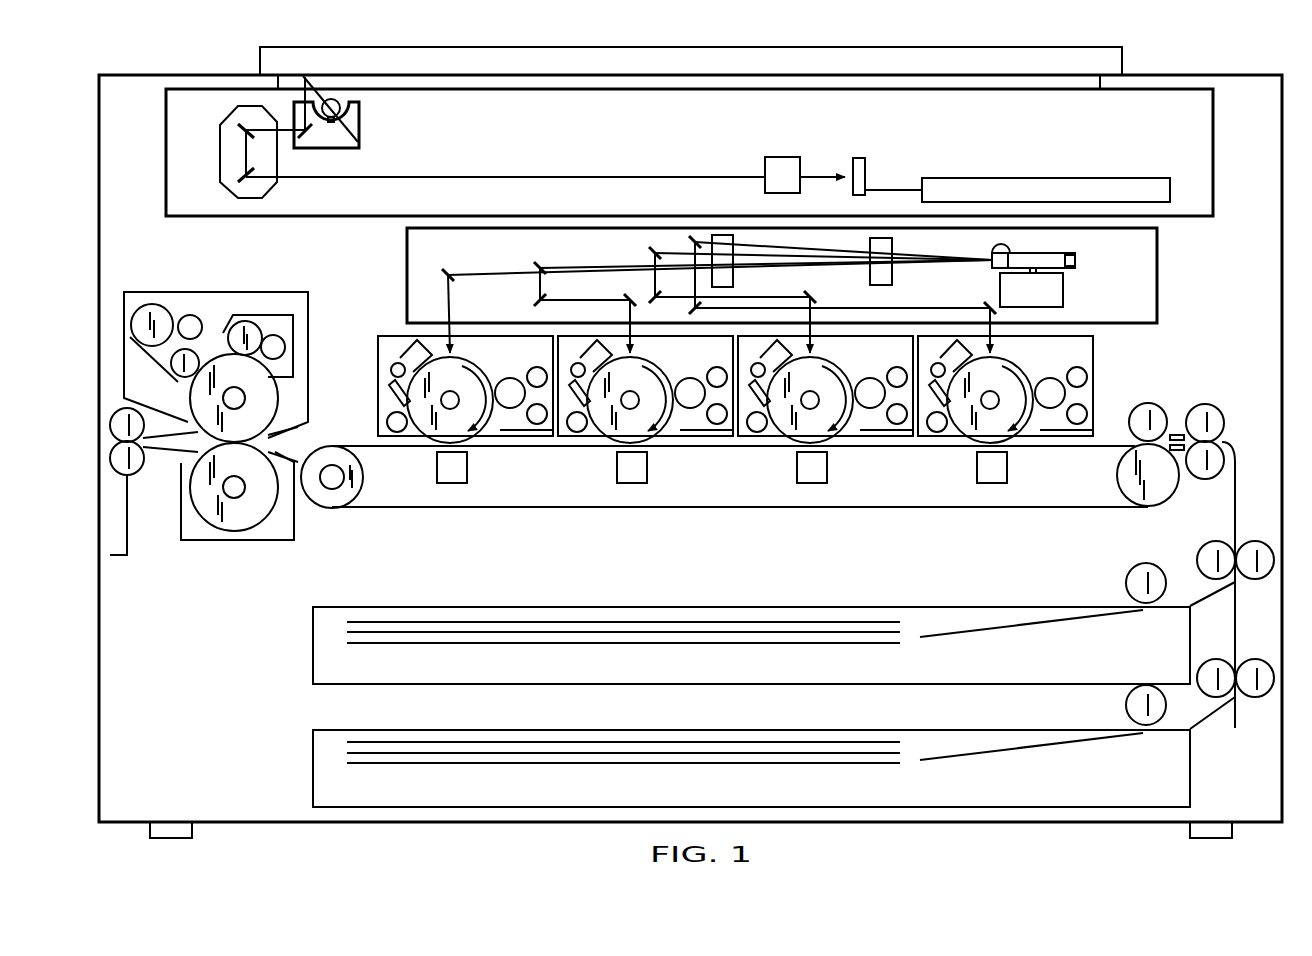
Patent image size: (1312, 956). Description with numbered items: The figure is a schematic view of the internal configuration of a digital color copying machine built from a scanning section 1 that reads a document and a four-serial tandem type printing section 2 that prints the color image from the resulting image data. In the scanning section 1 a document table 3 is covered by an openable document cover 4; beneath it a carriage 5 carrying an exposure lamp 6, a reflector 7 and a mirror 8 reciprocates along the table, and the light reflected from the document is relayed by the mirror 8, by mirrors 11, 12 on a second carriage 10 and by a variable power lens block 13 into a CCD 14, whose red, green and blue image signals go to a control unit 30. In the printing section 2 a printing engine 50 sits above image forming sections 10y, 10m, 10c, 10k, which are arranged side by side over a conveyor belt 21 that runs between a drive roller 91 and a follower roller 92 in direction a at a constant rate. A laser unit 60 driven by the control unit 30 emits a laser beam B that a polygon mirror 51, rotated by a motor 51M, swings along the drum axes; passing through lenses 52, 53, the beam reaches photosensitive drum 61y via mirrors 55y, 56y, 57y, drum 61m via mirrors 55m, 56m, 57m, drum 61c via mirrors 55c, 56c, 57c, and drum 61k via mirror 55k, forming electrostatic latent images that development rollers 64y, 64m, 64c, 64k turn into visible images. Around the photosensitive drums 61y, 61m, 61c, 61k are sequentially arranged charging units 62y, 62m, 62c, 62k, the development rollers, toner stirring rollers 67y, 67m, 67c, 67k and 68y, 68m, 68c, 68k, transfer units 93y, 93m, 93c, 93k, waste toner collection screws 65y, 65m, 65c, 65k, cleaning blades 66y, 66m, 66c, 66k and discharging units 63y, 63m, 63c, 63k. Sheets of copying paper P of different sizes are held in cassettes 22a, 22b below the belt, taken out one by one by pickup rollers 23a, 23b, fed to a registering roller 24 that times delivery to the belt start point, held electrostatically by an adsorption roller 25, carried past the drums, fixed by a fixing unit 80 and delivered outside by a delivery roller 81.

The scanning section 1 is at (1128, 105).
The printing section 2 is at (1198, 294).
The document table 3 is at (556, 92).
The document cover 4 is at (260, 62).
The carriage 5 is at (365, 127).
The exposure lamp 6 is at (352, 110).
The reflector 7 is at (355, 143).
The mirror 8 is at (312, 140).
The carriage 10 is at (275, 187).
The mirror 11 is at (240, 128).
The mirror 12 is at (240, 180).
The variable power lens block 13 is at (790, 157).
The CCD 14 is at (858, 158).
The control unit 30 is at (1143, 182).
The printing engine 50 is at (1157, 252).
The polygon mirror 51 is at (1075, 262).
The motor 51M is at (1063, 295).
The lens 52 is at (892, 250).
The lens 53 is at (722, 235).
The laser unit 60 is at (1010, 250).
The laser beam B is at (820, 257).
The mirror 55k is at (445, 272).
The mirror 55c is at (535, 268).
The mirror 56c is at (535, 302).
The mirror 57c is at (626, 298).
The mirror 55m is at (655, 252).
The mirror 56m is at (652, 295).
The mirror 57m is at (838, 293).
The mirror 55y is at (694, 242).
The mirror 56y is at (690, 308).
The mirror 57y is at (988, 306).
The image forming section 10k is at (378, 427).
The image forming section 10c is at (665, 437).
The image forming section 10m is at (845, 437).
The image forming section 10y is at (1093, 352).
The photosensitive drum 61k is at (472, 374).
The photosensitive drum 61c is at (652, 374).
The photosensitive drum 61m is at (832, 374).
The photosensitive drum 61y is at (1010, 374).
The charging unit 62k is at (408, 345).
The charging unit 62c is at (592, 343).
The charging unit 62m is at (790, 350).
The charging unit 62y is at (962, 343).
The discharging unit 63k is at (393, 365).
The discharging unit 63c is at (578, 362).
The discharging unit 63m is at (758, 362).
The discharging unit 63y is at (938, 362).
The development roller 64k is at (510, 408).
The development roller 64c is at (690, 408).
The development roller 64m is at (870, 408).
The development roller 64y is at (1050, 408).
The waste toner collection screw 65k is at (389, 416).
The waste toner collection screw 65c is at (582, 432).
The waste toner collection screw 65m is at (762, 432).
The waste toner collection screw 65y is at (942, 432).
The cleaning blade 66k is at (392, 388).
The cleaning blade 66c is at (573, 405).
The cleaning blade 66m is at (753, 405).
The cleaning blade 66y is at (933, 405).
The toner stirring roller 67k is at (537, 424).
The toner stirring roller 67c is at (717, 424).
The toner stirring roller 67m is at (897, 424).
The toner stirring roller 67y is at (1077, 424).
The toner stirring roller 68k is at (533, 368).
The toner stirring roller 68c is at (713, 368).
The toner stirring roller 68m is at (893, 368).
The toner stirring roller 68y is at (1073, 368).
The conveyor belt 21 is at (1102, 442).
The belt moving direction a is at (1115, 449).
The drive roller 91 is at (352, 500).
The follower roller 92 is at (1128, 488).
The transfer unit 93k is at (452, 483).
The transfer unit 93c is at (633, 483).
The transfer unit 93m is at (812, 483).
The transfer unit 93y is at (992, 483).
The registering roller 24 is at (1203, 405).
The adsorption roller 25 is at (1148, 403).
The fixing unit 80 is at (308, 298).
The delivery roller 81 is at (132, 472).
The cassette 22a is at (320, 645).
The cassette 22b is at (320, 768).
The pickup roller 23a is at (1130, 578).
The pickup roller 23b is at (1130, 703).
The copying paper P is at (718, 607).